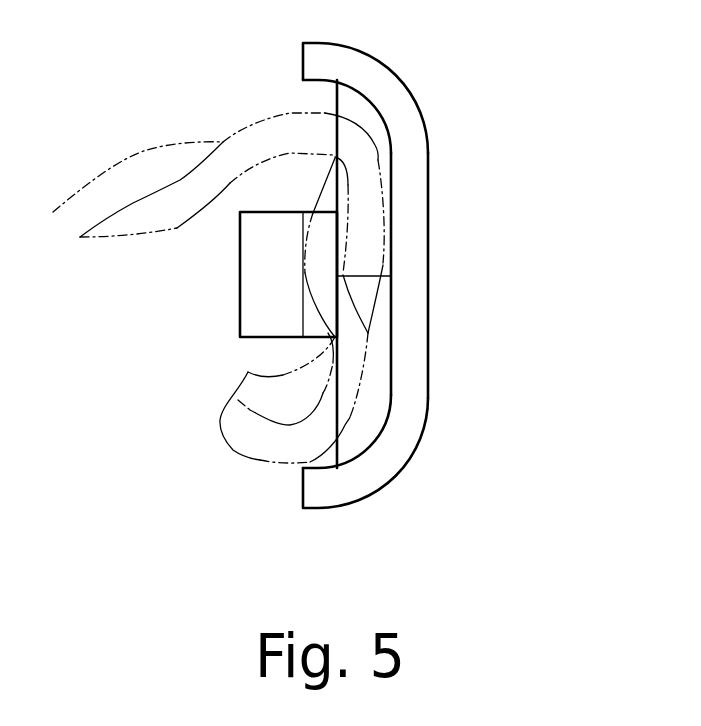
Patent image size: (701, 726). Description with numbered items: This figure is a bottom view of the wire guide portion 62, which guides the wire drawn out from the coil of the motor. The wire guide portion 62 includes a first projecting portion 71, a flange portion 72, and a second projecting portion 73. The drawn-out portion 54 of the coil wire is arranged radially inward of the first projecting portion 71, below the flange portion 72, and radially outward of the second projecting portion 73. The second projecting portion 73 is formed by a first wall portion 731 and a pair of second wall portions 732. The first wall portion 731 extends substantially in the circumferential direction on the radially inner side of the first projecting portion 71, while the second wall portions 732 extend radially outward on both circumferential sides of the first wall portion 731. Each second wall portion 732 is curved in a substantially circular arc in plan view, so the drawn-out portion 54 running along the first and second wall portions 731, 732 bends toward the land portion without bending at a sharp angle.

The drawn-out portion 54 is at (163, 173).
The wire guide portion 62 is at (387, 275).
The first projecting portion 71 is at (270, 280).
The flange portion 72 is at (370, 416).
The second projecting portion 73 is at (468, 275).
The first wall portion 731 is at (415, 237).
The second wall portion 732 is at (365, 73).